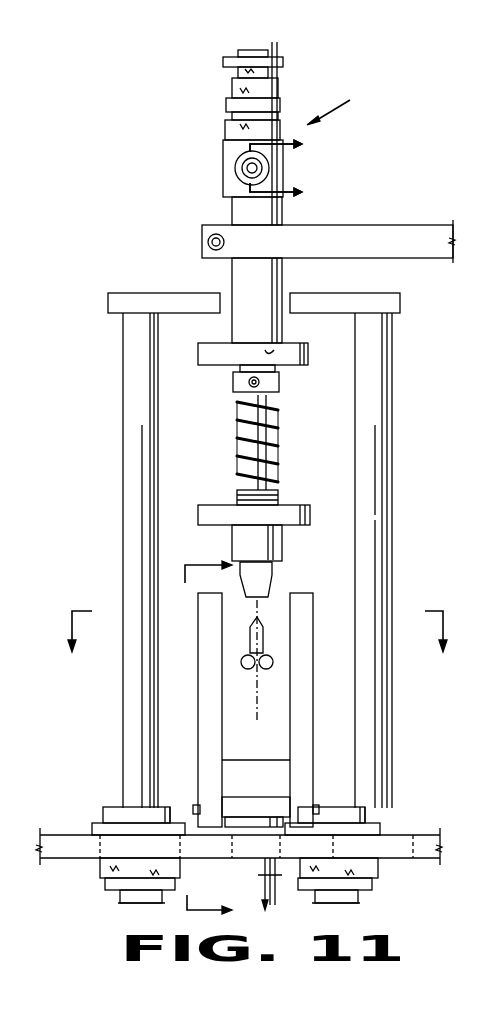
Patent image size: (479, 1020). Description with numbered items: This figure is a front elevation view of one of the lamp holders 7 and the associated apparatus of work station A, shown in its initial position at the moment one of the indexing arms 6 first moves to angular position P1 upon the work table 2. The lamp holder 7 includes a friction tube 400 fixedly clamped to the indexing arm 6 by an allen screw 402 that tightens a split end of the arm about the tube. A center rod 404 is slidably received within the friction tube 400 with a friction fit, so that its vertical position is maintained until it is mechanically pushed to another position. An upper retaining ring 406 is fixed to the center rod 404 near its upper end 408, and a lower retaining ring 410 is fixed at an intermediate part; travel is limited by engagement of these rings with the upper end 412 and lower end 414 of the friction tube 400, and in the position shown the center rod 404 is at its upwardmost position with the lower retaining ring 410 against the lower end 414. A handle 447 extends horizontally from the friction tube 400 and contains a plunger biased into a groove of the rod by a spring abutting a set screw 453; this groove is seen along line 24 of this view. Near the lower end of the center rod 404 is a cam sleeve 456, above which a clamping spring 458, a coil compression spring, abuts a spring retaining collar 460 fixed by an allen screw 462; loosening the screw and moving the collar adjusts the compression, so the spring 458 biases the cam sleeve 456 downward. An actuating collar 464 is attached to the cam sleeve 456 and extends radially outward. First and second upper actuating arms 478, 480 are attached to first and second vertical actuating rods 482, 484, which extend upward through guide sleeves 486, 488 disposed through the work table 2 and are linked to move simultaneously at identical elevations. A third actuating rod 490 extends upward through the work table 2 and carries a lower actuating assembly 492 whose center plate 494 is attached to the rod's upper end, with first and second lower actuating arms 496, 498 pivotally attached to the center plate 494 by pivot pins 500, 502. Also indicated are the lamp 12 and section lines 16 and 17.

The work table 2 is at (48, 832).
The indexing arm 6 is at (388, 236).
The lamp holder 7 is at (334, 105).
The workpiece slot 12 is at (262, 635).
The section view arrows 16 is at (255, 645).
The section view arrows 17 is at (208, 725).
The line 24— 24 is at (287, 169).
The friction tube 400 is at (232, 215).
The allen screw 402 is at (208, 242).
The center rod 404 is at (260, 424).
The upper retaining ring 406 is at (268, 63).
The upper end 408 is at (247, 52).
The lower retaining ring 410 is at (212, 348).
The upper end 412 is at (273, 98).
The lower end 414 is at (272, 352).
The handle 447 is at (264, 170).
The set screw 453 is at (248, 168).
The cam sleeve 456 is at (270, 548).
The clamping spring 458 is at (265, 455).
The spring retaining collar 460 is at (280, 385).
The allen screw 462 is at (242, 383).
The actuating collar 464 is at (290, 512).
The first upper actuating arm 478 is at (172, 298).
The second upper actuating arm 480 is at (330, 298).
The first vertical actuating rod 482 is at (128, 350).
The second vertical actuating rod 484 is at (374, 372).
The guide sleeve 486 is at (118, 810).
The guide sleeve 488 is at (392, 812).
The third actuating rod 490 is at (272, 878).
The lower actuating assembly 492 is at (314, 769).
The center plate 494 is at (247, 800).
The left guide 496 is at (208, 625).
The second lower actuating arm 498 is at (302, 648).
The pivot pin 500 is at (196, 805).
The pivot pin 502 is at (316, 805).